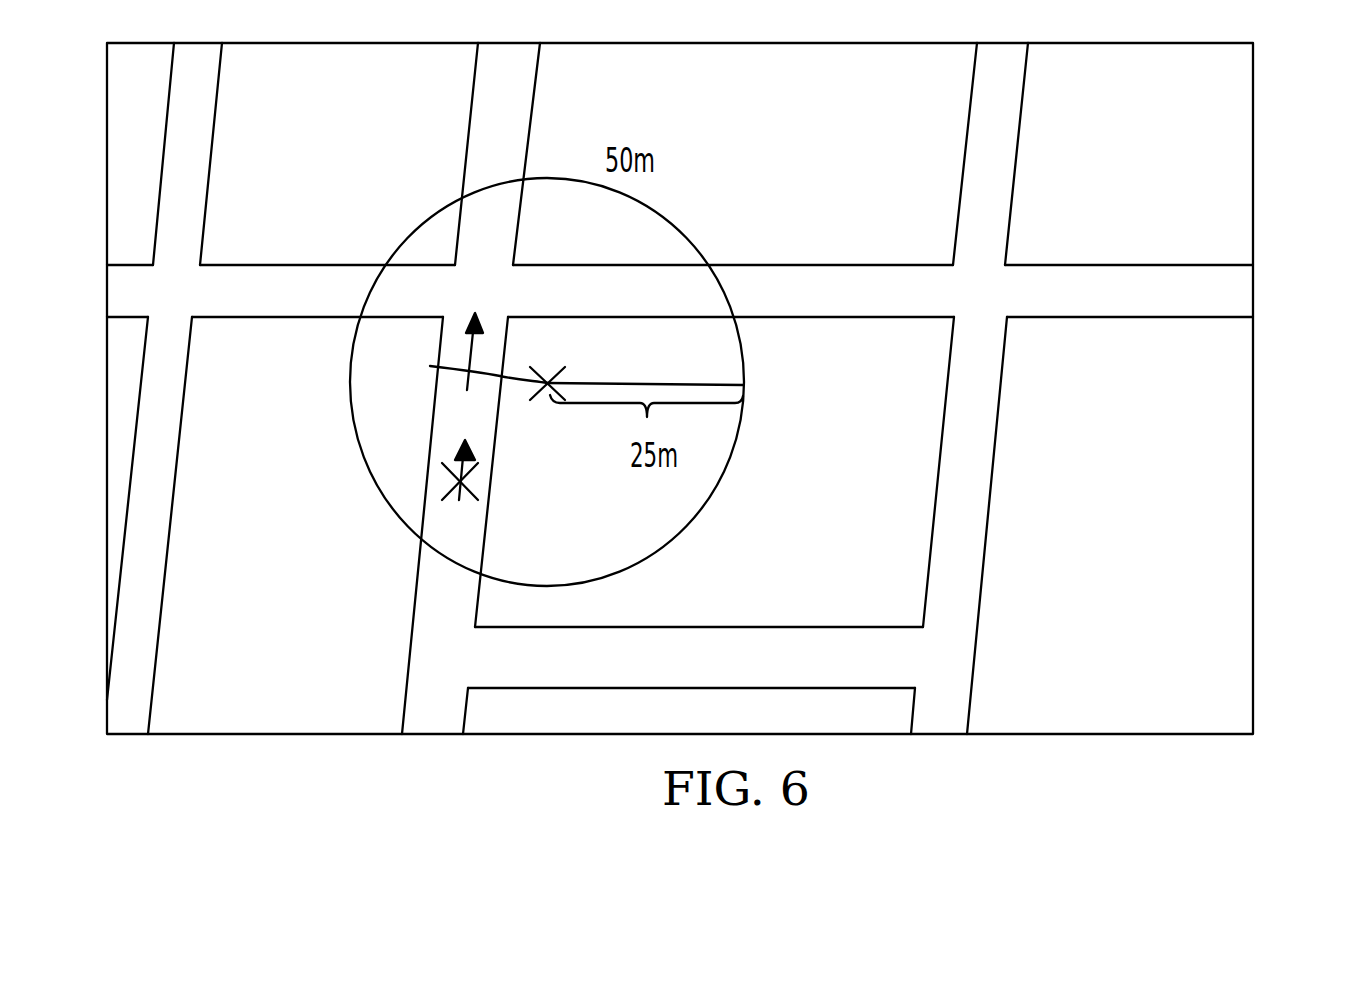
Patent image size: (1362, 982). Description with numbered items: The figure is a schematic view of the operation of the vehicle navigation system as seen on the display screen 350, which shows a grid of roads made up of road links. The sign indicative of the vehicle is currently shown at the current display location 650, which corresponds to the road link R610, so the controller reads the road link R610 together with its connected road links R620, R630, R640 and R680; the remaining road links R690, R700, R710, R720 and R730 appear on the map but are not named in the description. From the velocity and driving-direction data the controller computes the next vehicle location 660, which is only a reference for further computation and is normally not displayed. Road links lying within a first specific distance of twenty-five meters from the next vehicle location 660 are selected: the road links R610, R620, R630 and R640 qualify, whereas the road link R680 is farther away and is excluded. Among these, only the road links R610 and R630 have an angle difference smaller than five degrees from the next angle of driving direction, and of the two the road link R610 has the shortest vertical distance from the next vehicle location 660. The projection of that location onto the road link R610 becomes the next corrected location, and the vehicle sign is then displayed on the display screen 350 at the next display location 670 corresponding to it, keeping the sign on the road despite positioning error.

The display screen 350 is at (1252, 390).
The next display location 670 is at (430, 366).
The next vehicle location 660 is at (547, 390).
The current display location 650 is at (460, 500).
The road link R610 is at (420, 575).
The connected road link R620 is at (263, 317).
The connected road link R630 is at (465, 168).
The connected road link R640 is at (845, 263).
The connected road link R680 is at (827, 625).
The road link R690 is at (993, 465).
The road link R700 is at (177, 480).
The road link R710 is at (206, 197).
The road link R720 is at (1016, 170).
The road link R730 is at (1058, 319).